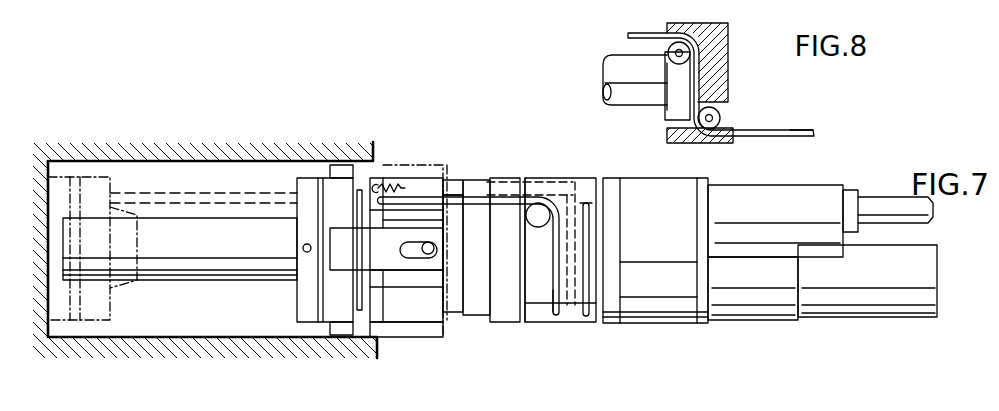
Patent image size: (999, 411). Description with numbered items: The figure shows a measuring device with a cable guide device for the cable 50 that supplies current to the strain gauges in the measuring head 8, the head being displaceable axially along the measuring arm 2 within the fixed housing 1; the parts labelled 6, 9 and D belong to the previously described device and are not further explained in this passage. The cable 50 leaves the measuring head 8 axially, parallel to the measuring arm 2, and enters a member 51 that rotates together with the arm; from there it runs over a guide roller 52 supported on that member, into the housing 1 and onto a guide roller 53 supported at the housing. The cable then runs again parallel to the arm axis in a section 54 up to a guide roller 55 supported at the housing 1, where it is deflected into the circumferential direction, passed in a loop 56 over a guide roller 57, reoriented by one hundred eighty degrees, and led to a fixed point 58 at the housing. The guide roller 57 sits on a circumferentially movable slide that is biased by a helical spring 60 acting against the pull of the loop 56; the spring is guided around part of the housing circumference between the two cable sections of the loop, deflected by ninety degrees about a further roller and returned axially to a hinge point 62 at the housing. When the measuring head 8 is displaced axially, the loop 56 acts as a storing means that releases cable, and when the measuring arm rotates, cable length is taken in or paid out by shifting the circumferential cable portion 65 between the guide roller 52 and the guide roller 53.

In FIG. 7, the housing 1 is at (403, 323).
In FIG. 8, the housing 1 is at (714, 37).
In FIG. 7, the measuring arm 2 is at (188, 280).
In FIG. 8, the measuring arm 2 is at (622, 70).
In FIG. 7, the cylinder 6 is at (102, 325).
In FIG. 7, the measuring head 8 is at (50, 326).
In FIG. 7, the pin 9 is at (307, 253).
In FIG. 7, the stroke length D is at (262, 158).
In FIG. 7, the cable 50 is at (206, 190).
In FIG. 8, the cable 50 is at (774, 128).
In FIG. 8, the member 51 is at (706, 88).
In FIG. 8, the guide roller 52 is at (657, 87).
In FIG. 7, the guide roller 53 is at (400, 199).
In FIG. 8, the guide roller 53 is at (720, 118).
In FIG. 7, the section 54 is at (459, 183).
In FIG. 8, the section 54 is at (808, 139).
In FIG. 7, the guide roller 55 is at (533, 198).
In FIG. 7, the loop 56 is at (556, 318).
In FIG. 7, the guide roller 57 is at (583, 316).
In FIG. 7, the fixed point 58 is at (585, 207).
In FIG. 7, the helical spring 60 is at (483, 180).
In FIG. 7, the hinge point 62 is at (376, 186).
In FIG. 8, the cable portion 65 is at (708, 62).